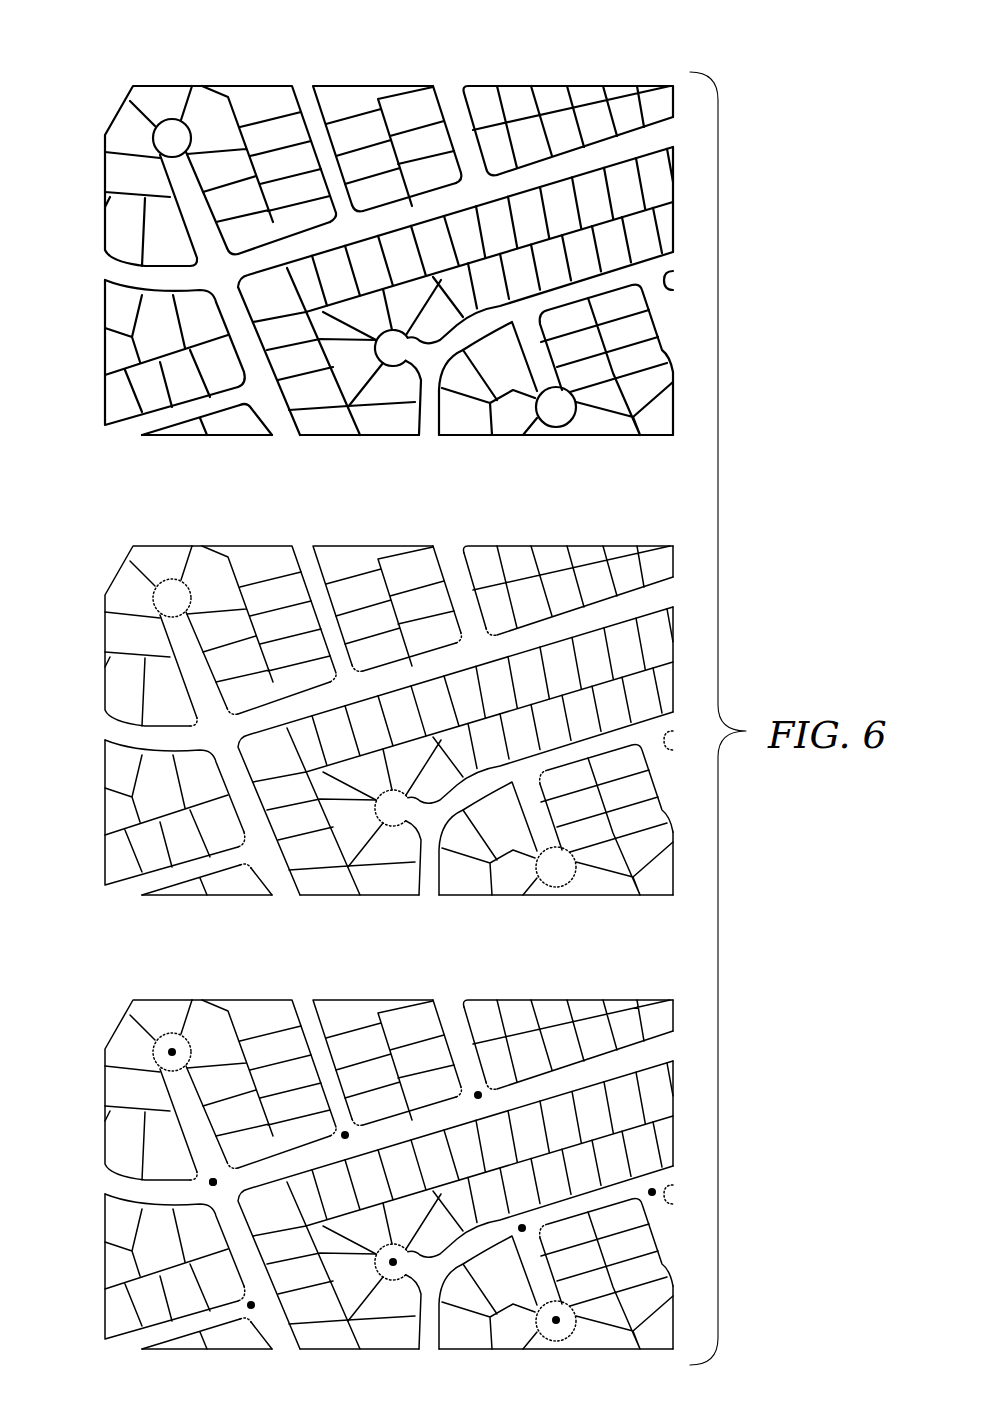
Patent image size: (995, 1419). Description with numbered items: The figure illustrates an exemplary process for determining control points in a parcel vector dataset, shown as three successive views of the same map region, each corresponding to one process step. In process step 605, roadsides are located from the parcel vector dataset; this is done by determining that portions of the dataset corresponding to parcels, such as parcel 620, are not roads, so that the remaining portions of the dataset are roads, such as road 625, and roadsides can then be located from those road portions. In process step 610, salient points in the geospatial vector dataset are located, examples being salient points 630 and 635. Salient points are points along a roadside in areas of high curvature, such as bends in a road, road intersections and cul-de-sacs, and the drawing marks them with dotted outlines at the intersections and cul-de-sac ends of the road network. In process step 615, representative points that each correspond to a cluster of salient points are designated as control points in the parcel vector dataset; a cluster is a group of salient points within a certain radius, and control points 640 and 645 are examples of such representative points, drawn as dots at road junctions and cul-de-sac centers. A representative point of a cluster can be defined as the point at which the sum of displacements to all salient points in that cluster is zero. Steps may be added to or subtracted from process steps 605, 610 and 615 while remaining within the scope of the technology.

The process step 605 is at (122, 82).
The process step 610 is at (122, 528).
The process step 615 is at (122, 972).
The parcel 620 is at (260, 104).
The road 625 is at (449, 93).
The salient point 630 is at (246, 680).
The salient point 635 is at (576, 840).
The control point 640 is at (238, 1142).
The control point 645 is at (576, 1294).